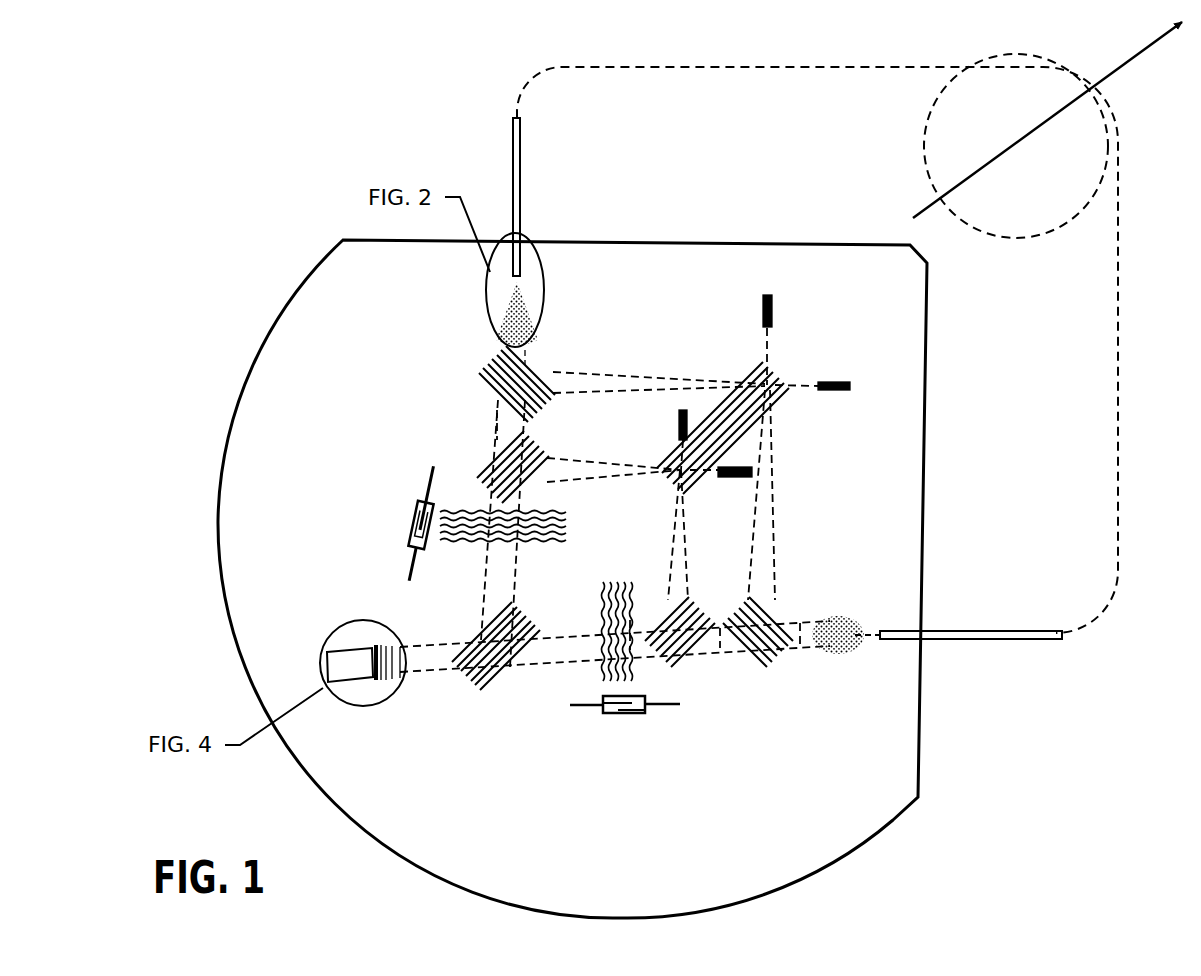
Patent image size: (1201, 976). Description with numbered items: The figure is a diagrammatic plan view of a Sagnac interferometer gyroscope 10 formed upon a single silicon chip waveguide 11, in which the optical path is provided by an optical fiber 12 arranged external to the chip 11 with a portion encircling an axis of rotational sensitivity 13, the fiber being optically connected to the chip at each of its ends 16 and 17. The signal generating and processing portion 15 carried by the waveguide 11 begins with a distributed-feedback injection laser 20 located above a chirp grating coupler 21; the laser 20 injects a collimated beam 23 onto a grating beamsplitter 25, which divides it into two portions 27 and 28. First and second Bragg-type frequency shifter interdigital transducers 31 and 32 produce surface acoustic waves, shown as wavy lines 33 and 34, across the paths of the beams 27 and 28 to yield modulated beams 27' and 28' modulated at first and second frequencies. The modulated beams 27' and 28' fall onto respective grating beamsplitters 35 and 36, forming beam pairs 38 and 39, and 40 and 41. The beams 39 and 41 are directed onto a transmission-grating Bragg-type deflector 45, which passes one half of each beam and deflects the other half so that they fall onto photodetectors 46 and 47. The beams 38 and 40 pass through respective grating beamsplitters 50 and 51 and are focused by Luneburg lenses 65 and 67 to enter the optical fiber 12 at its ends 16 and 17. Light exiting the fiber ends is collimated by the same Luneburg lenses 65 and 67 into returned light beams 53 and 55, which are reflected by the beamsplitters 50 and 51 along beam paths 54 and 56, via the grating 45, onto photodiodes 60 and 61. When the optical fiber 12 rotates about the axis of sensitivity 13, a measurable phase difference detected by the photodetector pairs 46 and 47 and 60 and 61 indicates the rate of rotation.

The Sagnac interferometer gyroscope 10 is at (318, 188).
The silicon chip waveguide 11 is at (238, 413).
The optical fiber 12 is at (455, 110).
The axis of rotational sensitivity 13 is at (1135, 63).
The signal generating and processing portion 15 is at (853, 305).
The fiber end 16 is at (521, 185).
The fiber end 17 is at (968, 630).
The injection laser 20 is at (347, 652).
The chirp grating coupler 21 is at (395, 682).
The collimated beam 23 is at (432, 640).
The grating beamsplitter 25 is at (505, 688).
The beam portion 27 is at (459, 520).
The modulated beam 27' is at (481, 533).
The beam portion 28 is at (615, 675).
The modulated beam 28' is at (647, 611).
The first Bragg-type frequency shifter interdigital transducer 31 is at (408, 518).
The second Bragg-type frequency shifter interdigital transducer 32 is at (627, 718).
The surface acoustic waves 33 is at (560, 512).
The surface acoustic waves 34 is at (600, 602).
The grating beamsplitter 35 is at (490, 465).
The grating beamsplitter 36 is at (670, 668).
The beam 38 is at (486, 412).
The beam 39 is at (578, 460).
The beam 40 is at (720, 640).
The beam 41 is at (690, 570).
The transmission-grating Bragg-type deflector 45 is at (775, 397).
The photodetector 46 is at (679, 424).
The photodetector 47 is at (735, 480).
The grating beamsplitter 50 is at (492, 358).
The grating beamsplitter 51 is at (748, 666).
The returned light beam 53 is at (534, 354).
The beam path 54 is at (635, 382).
The returned light beam 55 is at (798, 625).
The beam path 56 is at (772, 540).
The photodiode 60 is at (772, 312).
The photodiode 61 is at (832, 381).
The Luneburg lens 65 is at (535, 300).
The Luneburg lens 67 is at (842, 615).